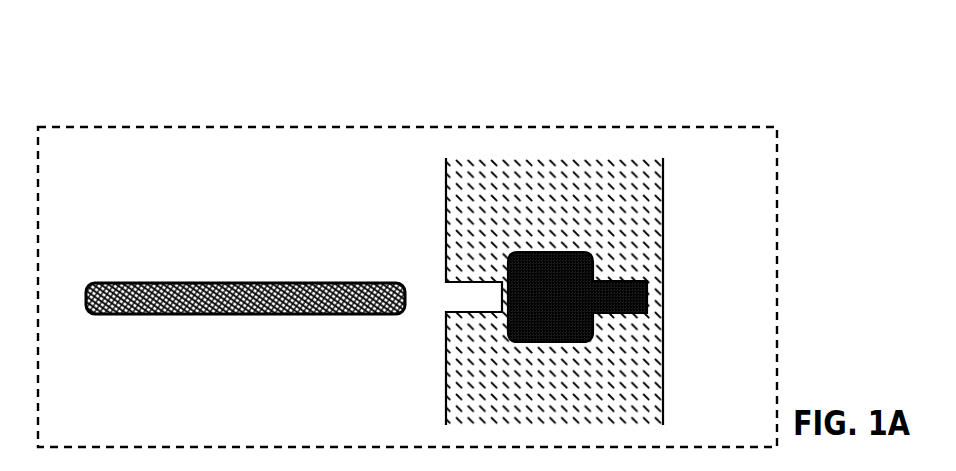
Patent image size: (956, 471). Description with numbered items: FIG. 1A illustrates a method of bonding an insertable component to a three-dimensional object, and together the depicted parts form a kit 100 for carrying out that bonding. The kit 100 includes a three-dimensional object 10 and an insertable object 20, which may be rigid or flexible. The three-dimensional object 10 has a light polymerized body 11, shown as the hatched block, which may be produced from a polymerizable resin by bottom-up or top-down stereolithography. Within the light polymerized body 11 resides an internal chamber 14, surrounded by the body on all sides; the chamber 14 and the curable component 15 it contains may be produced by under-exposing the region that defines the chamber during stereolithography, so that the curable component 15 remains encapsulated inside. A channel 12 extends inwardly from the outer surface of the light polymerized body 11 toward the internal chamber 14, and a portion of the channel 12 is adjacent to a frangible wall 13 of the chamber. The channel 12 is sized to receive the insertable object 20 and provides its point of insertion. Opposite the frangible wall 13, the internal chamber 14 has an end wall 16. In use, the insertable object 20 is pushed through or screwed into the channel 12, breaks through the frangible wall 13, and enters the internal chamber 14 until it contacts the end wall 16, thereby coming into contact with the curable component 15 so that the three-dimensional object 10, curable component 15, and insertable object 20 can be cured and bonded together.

The kit 100 is at (777, 127).
The three-dimensional object 10 is at (265, 228).
The light polymerized body 11 is at (472, 230).
The channel 12 is at (448, 296).
The frangible wall 13 is at (507, 295).
The internal chamber 14 is at (620, 313).
The curable component 15 is at (540, 310).
The end wall 16 is at (647, 297).
The insertable object 20 is at (87, 305).